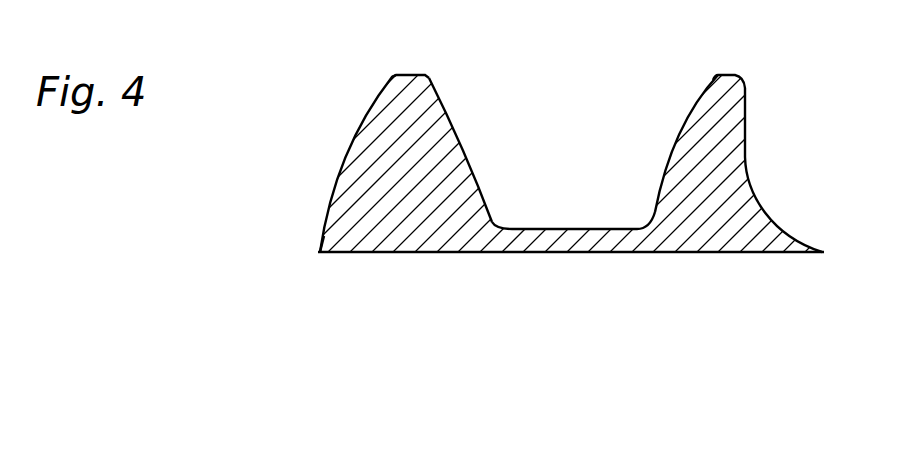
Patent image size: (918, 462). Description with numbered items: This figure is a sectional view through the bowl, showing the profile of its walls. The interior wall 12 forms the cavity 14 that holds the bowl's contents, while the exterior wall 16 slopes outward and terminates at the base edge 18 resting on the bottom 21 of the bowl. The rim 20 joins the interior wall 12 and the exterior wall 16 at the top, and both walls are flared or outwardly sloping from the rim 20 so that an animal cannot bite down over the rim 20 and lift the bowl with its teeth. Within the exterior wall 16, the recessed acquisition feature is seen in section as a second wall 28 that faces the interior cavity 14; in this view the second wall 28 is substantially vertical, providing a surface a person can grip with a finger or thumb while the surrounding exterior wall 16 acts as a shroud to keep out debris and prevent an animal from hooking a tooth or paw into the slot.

The interior wall 12 is at (692, 107).
The cavity 14 is at (581, 182).
The exterior wall 16 is at (353, 140).
The base edge 18 is at (319, 255).
The rim 20 is at (397, 74).
The bottom 21 is at (400, 255).
The second wall 28 is at (746, 150).